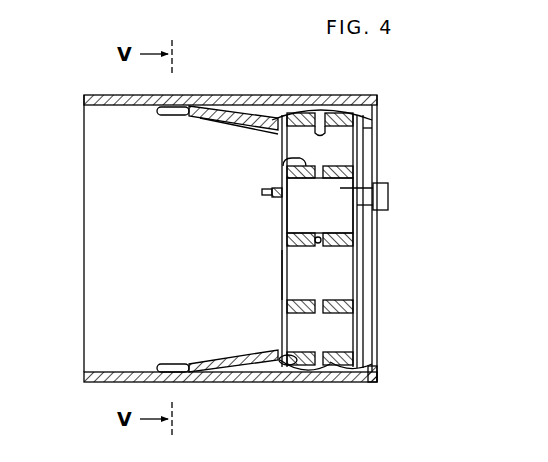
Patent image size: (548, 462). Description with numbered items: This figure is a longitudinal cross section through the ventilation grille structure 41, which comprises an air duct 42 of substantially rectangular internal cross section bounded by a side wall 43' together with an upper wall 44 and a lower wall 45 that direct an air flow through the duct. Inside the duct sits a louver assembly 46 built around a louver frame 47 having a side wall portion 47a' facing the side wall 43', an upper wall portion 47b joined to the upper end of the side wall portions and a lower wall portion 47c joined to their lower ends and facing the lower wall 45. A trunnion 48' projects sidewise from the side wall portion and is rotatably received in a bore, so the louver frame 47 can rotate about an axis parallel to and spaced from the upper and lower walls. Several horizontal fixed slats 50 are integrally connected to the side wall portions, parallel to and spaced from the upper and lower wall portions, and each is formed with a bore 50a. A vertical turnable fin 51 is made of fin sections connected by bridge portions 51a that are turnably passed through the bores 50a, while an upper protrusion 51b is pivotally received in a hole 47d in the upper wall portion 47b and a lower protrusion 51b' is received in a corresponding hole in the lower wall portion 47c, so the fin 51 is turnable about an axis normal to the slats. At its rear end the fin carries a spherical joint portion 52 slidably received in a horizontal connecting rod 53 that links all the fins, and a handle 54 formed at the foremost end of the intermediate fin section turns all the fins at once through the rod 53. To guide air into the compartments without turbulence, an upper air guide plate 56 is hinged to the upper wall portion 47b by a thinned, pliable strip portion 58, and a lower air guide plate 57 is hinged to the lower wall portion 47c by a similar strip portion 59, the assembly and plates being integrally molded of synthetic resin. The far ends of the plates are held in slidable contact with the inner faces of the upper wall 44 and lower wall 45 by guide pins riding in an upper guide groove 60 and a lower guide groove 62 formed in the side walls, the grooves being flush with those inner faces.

The ventilation grille structure 41 is at (380, 392).
The air duct 42 is at (118, 95).
The side wall 43' is at (62, 238).
The upper wall 44 is at (272, 95).
The lower wall 45 is at (224, 383).
The louver assembly 46 is at (280, 270).
The louver frame 47 is at (368, 114).
The side wall portion 47a' is at (389, 127).
The upper wall portion 47b is at (350, 115).
The lower wall portion 47c is at (344, 383).
The hole 47d is at (312, 128).
The trunnion 48' is at (314, 261).
The horizontal fixed slat 50 is at (283, 172).
The bore 50a is at (282, 160).
The vertical turnable fin 51 is at (338, 288).
The bridge portion 51a is at (320, 205).
The upper protrusion 51b is at (323, 93).
The lower protrusion 51b' is at (310, 387).
The spherical joint portion 52 is at (268, 200).
The horizontal connecting rod 53 is at (270, 190).
The handle 54 is at (390, 198).
The upper air guide plate 56 is at (196, 116).
The lower air guide plate 57 is at (236, 358).
The strip portion 58 is at (295, 108).
The strip portion 59 is at (281, 357).
The upper guide groove 60 is at (243, 112).
The lower guide groove 62 is at (170, 364).